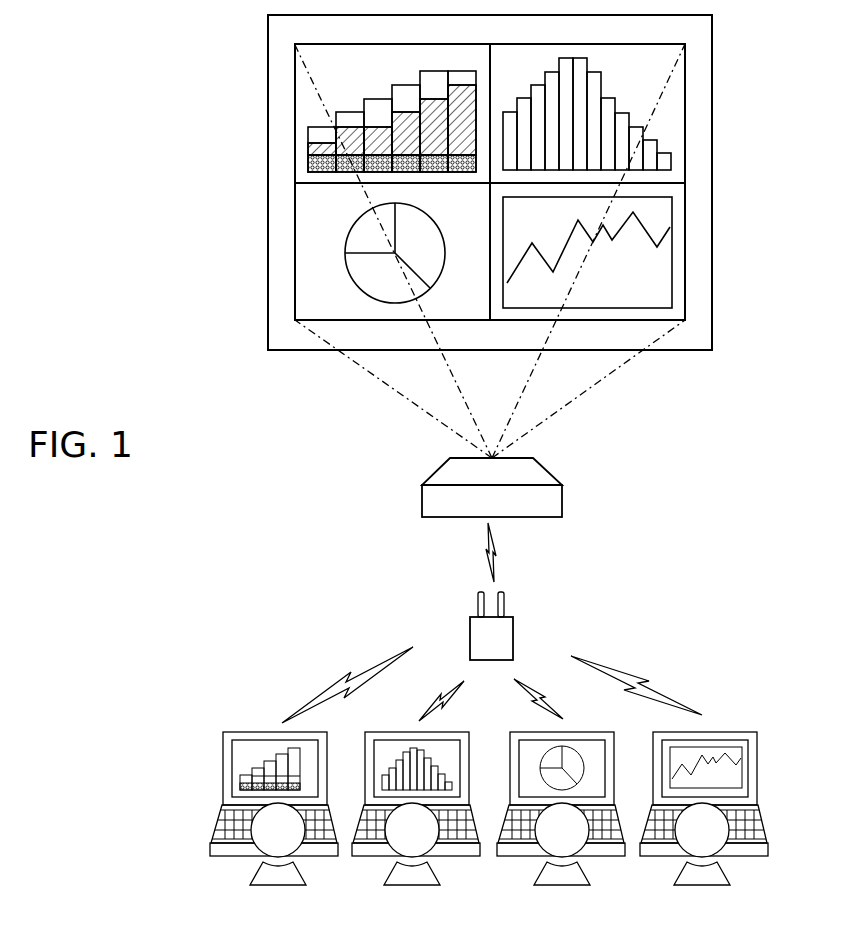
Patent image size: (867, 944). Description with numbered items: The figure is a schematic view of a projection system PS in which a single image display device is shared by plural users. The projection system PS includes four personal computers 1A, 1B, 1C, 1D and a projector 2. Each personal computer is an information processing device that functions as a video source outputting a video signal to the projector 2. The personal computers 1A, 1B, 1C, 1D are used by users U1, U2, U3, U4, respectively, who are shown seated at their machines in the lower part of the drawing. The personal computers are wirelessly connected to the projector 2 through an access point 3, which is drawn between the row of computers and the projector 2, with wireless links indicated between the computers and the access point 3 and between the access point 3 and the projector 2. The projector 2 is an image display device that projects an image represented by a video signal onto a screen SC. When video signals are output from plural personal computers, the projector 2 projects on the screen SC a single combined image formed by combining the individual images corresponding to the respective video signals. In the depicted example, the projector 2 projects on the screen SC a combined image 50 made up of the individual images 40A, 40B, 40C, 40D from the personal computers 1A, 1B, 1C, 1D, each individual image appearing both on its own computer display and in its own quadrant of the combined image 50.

The projection system PS is at (284, 476).
The screen SC is at (713, 90).
The combined image 50 is at (685, 185).
The projector 2 is at (562, 484).
The access point 3 is at (513, 618).
The personal computer 1A is at (240, 733).
The personal computer 1B is at (407, 733).
The personal computer 1C is at (568, 733).
The personal computer 1D is at (752, 733).
The individual image 40A is at (272, 748).
The individual image 40B is at (383, 757).
The individual image 40C is at (597, 758).
The individual image 40D is at (710, 748).
The user U1 is at (258, 871).
The user U2 is at (394, 871).
The user U3 is at (538, 871).
The user U4 is at (685, 871).